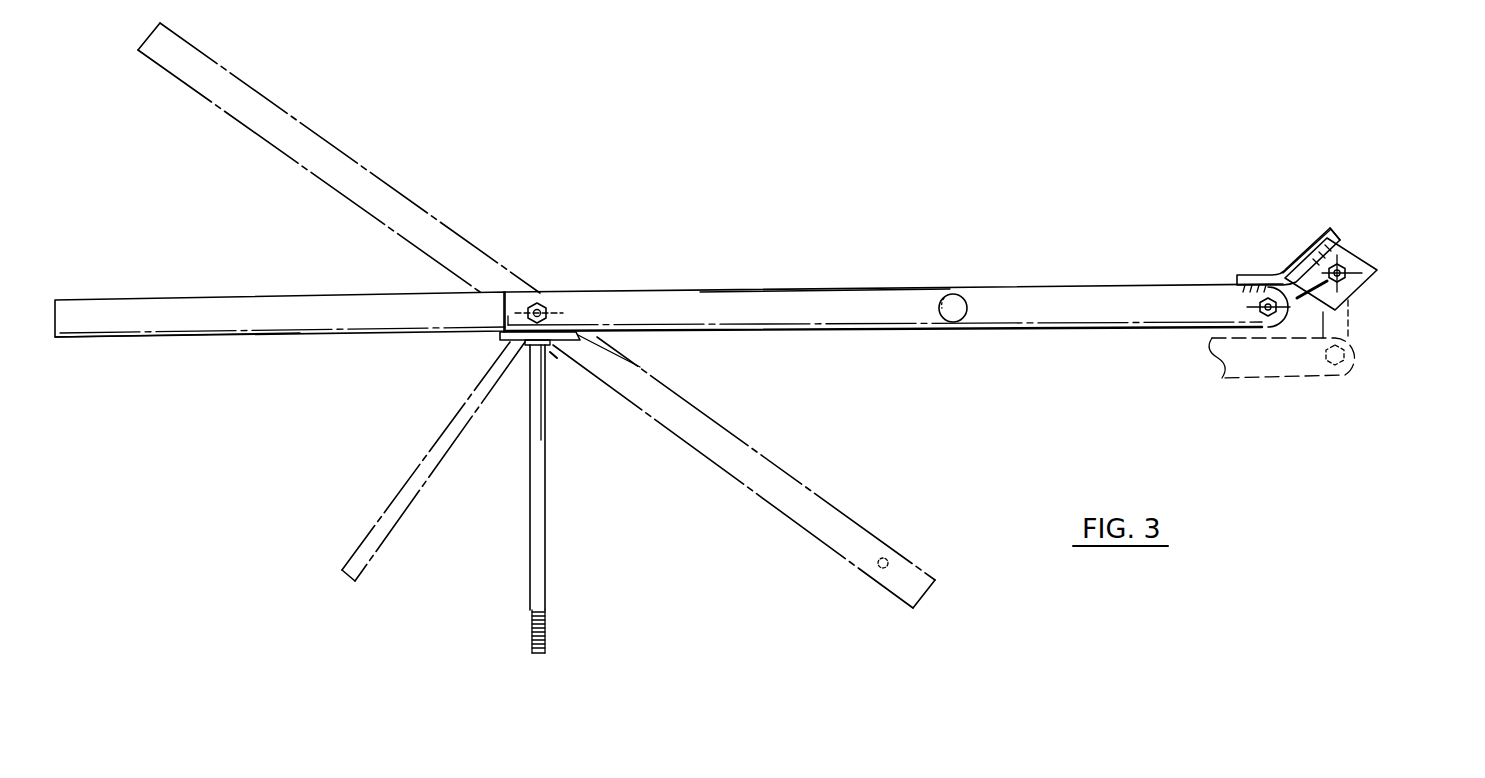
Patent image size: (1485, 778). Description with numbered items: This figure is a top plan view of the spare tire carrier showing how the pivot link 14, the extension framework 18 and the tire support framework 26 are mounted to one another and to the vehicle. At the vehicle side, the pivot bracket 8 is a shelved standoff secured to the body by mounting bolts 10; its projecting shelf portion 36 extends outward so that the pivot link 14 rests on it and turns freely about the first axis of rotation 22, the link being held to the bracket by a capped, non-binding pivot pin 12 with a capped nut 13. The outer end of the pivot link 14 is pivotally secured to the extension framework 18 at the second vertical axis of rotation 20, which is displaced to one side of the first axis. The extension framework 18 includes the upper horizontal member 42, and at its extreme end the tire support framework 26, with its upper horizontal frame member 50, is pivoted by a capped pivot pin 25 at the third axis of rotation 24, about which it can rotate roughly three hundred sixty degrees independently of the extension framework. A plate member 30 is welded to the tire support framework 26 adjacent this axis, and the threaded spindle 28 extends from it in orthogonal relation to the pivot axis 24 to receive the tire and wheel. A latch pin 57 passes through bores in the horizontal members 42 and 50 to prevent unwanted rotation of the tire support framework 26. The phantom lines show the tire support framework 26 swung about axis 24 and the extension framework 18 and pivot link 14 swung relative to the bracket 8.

The pivot bracket 8 is at (1285, 257).
The mounting bolt 10 is at (1237, 292).
The capped pivot pin 12 is at (1360, 287).
The capped nut 13 is at (1268, 323).
The upper pivot link 14 is at (1313, 299).
The extension framework 18 is at (891, 340).
The second vertical axis of rotation 20 is at (1273, 323).
The first axis of rotation 22 is at (1352, 265).
The third axis of rotation 24 is at (540, 304).
The capped pivot pin 25 is at (540, 315).
The tire support framework 26 is at (233, 345).
The threaded spindle 28 is at (549, 489).
The plate member 30 is at (641, 366).
The projecting shelf portion 36 is at (1353, 210).
The upper horizontal member 42 is at (836, 321).
The upper horizontal frame member 50 is at (354, 326).
The latch pin 57 is at (950, 293).